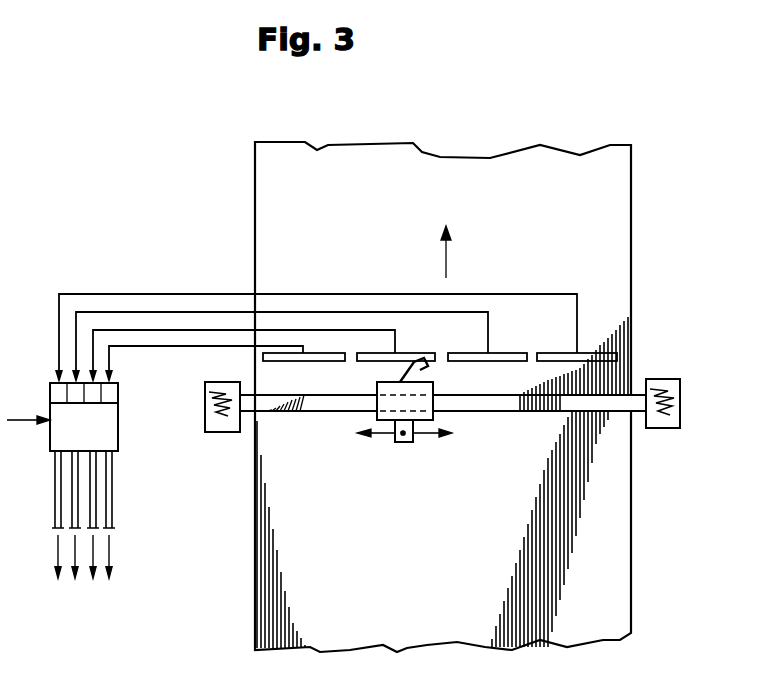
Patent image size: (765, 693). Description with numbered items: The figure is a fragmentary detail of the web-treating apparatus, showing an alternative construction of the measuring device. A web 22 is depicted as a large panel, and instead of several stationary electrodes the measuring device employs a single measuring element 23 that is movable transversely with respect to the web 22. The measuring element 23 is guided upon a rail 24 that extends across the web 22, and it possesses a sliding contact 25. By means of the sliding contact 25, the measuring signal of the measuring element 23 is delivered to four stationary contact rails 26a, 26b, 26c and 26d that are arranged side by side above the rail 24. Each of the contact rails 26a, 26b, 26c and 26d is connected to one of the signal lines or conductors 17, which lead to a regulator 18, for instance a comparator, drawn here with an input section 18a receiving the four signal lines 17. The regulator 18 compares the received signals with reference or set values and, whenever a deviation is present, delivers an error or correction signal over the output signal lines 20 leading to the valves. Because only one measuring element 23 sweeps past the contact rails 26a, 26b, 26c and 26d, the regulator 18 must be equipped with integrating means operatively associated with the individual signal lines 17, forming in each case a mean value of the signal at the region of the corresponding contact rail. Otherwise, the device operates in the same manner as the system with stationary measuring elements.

The signal lines 17 is at (130, 294).
The regulator 18 is at (112, 427).
The distributor inlet chambers 18a is at (108, 397).
The output signal lines 20 is at (112, 485).
The web 22 is at (622, 272).
The measuring element 23 is at (380, 417).
The rail 24 is at (510, 405).
The sliding contact 25 is at (428, 368).
The contact rail 26a is at (288, 361).
The contact rail 26b is at (408, 357).
The contact rail 26c is at (515, 353).
The contact rail 26d is at (590, 355).